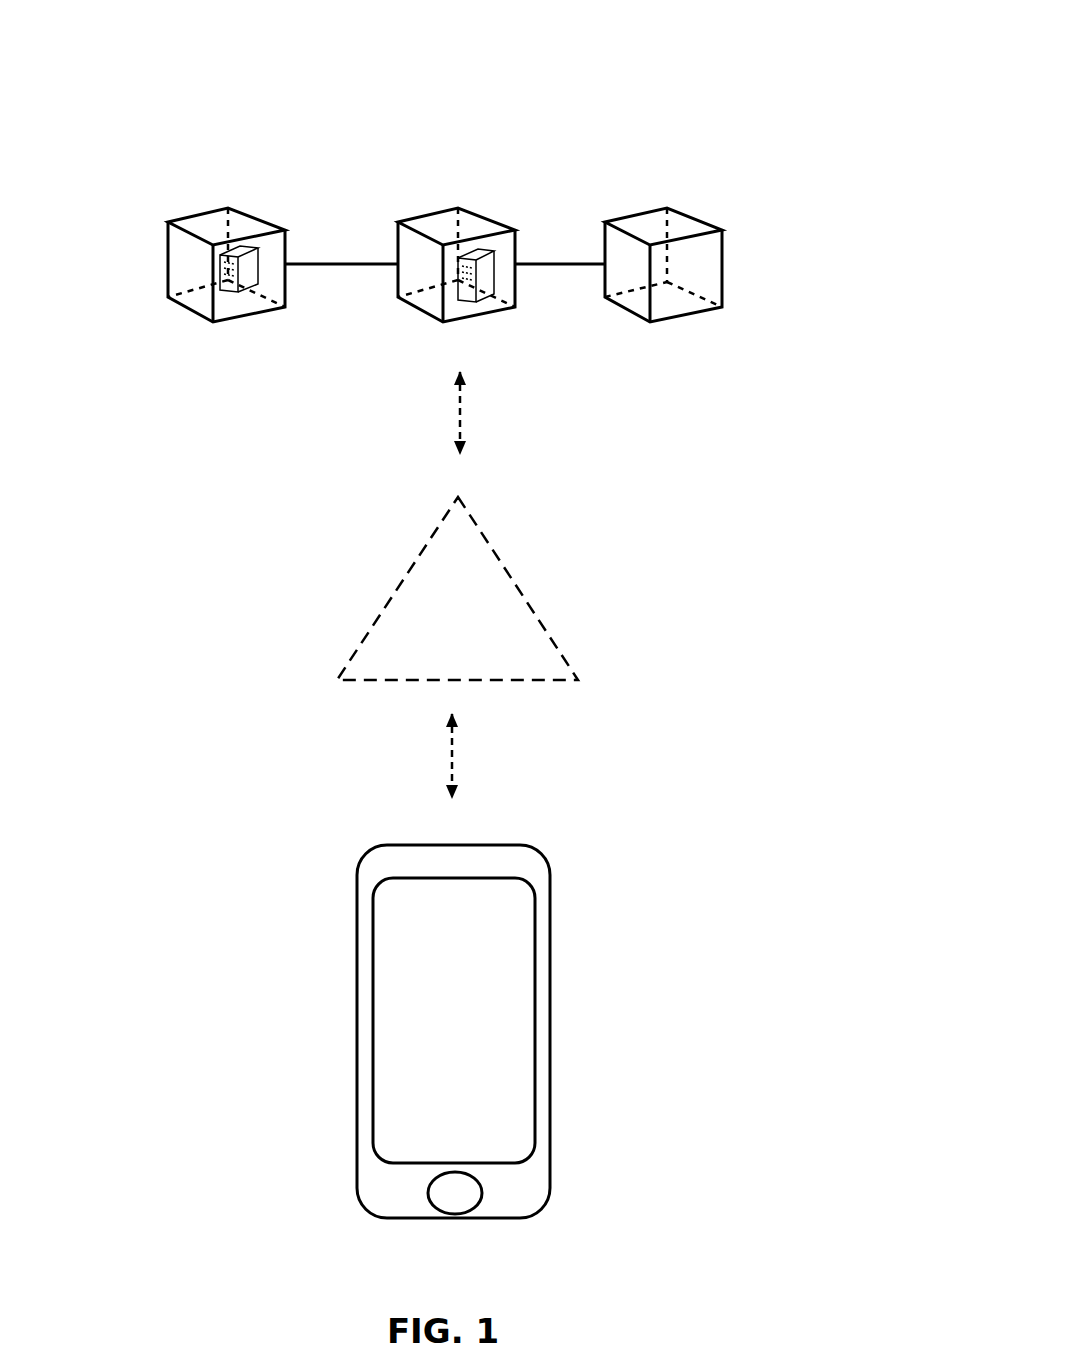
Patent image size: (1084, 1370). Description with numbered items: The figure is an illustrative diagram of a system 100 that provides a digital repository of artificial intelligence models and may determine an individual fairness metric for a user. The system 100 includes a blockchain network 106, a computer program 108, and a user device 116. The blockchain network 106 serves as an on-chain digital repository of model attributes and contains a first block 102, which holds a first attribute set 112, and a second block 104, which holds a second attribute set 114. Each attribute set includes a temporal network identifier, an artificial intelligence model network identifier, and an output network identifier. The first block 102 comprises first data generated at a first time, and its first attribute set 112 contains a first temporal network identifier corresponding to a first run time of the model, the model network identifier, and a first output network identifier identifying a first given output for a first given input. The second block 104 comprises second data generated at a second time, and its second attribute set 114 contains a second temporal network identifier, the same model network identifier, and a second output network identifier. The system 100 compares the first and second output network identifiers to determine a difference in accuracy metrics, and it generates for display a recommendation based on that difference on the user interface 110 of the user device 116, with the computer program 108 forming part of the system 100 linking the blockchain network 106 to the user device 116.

The system 100 is at (484, 40).
The first block 102 is at (162, 291).
The second block 104 is at (475, 245).
The blockchain network 106 is at (745, 352).
The computer program 108 is at (457, 588).
The user interface 110 is at (503, 1057).
The first attribute set 112 is at (237, 297).
The second attribute set 114 is at (498, 302).
The user device 116 is at (586, 1031).